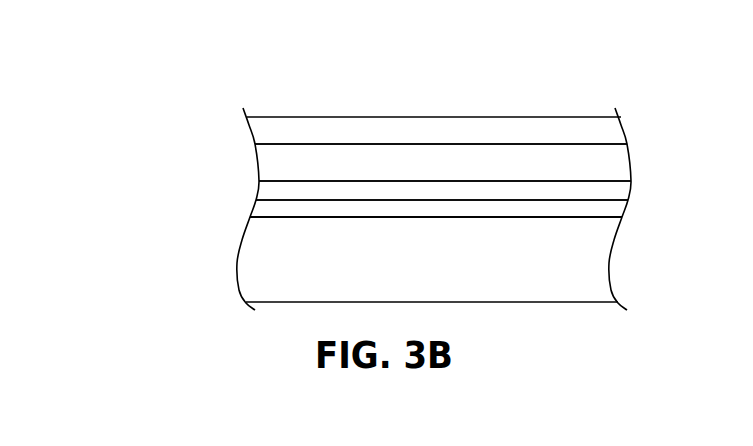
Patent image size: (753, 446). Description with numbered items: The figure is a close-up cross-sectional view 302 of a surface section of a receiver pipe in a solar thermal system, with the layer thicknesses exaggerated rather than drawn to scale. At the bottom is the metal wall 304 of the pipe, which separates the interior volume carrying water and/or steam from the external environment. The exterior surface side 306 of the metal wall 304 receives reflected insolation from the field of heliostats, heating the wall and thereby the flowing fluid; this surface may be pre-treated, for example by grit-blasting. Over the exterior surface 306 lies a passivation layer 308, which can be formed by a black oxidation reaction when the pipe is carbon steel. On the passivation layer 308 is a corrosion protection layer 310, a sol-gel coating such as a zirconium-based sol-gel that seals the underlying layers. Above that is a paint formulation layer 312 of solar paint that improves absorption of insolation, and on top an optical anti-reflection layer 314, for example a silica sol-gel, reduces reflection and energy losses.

The close-up cross-sectional view 302 is at (207, 97).
The metal wall 304 is at (445, 266).
The exterior surface side 306 is at (610, 218).
The passivation layer 308 is at (265, 212).
The corrosion protection layer 310 is at (615, 192).
The paint formulation layer 312 is at (445, 175).
The optical anti-reflection layer 314 is at (607, 130).